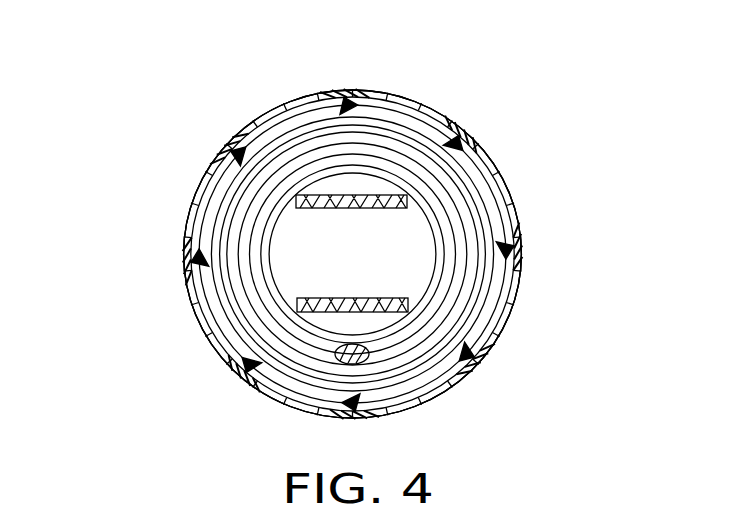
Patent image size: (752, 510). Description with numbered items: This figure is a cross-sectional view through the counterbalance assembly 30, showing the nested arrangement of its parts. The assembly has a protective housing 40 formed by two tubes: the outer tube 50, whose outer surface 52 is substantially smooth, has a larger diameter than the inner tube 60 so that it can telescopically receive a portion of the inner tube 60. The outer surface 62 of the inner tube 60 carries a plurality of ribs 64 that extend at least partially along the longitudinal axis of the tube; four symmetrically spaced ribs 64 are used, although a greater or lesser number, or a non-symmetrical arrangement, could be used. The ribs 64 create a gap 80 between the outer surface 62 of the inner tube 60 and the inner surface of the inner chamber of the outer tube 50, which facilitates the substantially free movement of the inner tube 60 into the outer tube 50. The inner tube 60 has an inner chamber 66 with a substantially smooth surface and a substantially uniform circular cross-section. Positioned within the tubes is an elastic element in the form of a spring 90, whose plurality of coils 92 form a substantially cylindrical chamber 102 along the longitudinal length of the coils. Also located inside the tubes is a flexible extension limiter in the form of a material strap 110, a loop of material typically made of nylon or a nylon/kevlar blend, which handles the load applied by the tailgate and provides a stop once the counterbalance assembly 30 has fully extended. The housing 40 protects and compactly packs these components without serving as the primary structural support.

The counterbalance assembly 30 is at (164, 117).
The protective housing 40 is at (512, 153).
The tube 50 is at (482, 132).
The outer surface 52 is at (443, 116).
The tube 60 is at (272, 132).
The outer surface 62 is at (475, 333).
The ribs 64 is at (357, 108).
The inner chamber 66 is at (448, 375).
The gap 80 is at (495, 215).
The spring 90 is at (445, 300).
The coils 92 is at (263, 308).
The cylindrical chamber 102 is at (287, 272).
The material strap 110 is at (356, 193).